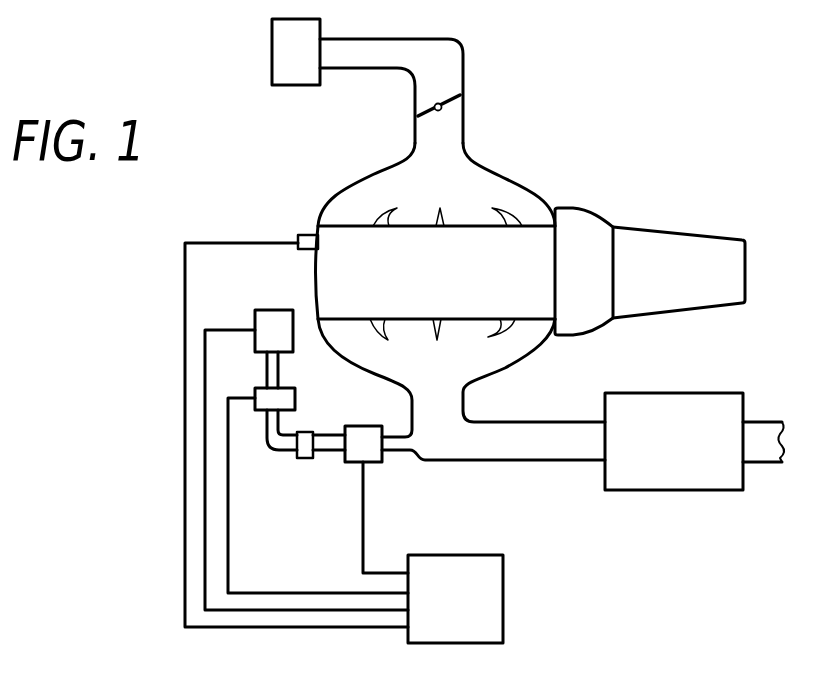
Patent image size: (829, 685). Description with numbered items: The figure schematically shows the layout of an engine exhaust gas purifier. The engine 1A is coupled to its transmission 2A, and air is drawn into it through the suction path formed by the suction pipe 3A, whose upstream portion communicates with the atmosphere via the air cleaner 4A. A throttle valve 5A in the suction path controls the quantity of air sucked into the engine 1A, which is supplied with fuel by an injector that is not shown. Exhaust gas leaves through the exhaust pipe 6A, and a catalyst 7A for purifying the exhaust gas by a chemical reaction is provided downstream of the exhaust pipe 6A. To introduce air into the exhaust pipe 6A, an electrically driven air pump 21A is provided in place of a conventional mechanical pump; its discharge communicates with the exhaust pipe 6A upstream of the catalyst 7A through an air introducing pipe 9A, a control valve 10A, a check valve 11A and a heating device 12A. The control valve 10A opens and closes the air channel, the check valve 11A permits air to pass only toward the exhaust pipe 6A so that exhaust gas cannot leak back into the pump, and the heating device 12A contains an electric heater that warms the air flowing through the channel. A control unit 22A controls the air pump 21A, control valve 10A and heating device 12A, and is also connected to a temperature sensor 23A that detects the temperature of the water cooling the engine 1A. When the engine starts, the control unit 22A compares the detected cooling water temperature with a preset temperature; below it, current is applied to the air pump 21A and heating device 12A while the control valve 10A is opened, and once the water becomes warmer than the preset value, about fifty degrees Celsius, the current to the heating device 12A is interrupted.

The engine 1A is at (527, 238).
The transmission 2A is at (662, 252).
The suction pipe 3A is at (472, 180).
The air cleaner 4A is at (272, 48).
The throttle valve 5A is at (450, 97).
The exhaust pipe 6A is at (522, 450).
The catalyst 7A is at (662, 482).
The air introducing pipe 9A is at (270, 367).
The control valve 10A is at (287, 400).
The check valve 11A is at (300, 460).
The heating device 12A is at (370, 448).
The air pump 21A is at (270, 317).
The control unit 22A is at (490, 582).
The temperature sensor 23A is at (303, 228).